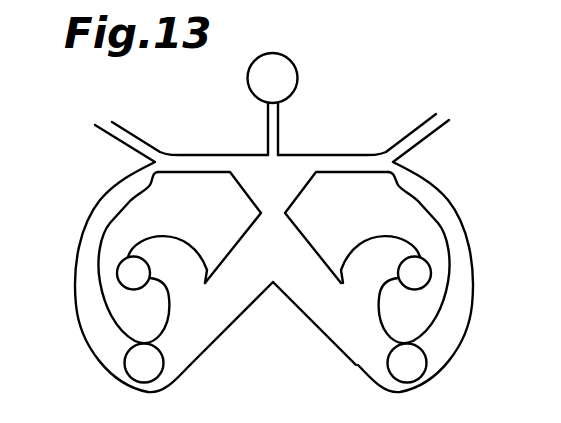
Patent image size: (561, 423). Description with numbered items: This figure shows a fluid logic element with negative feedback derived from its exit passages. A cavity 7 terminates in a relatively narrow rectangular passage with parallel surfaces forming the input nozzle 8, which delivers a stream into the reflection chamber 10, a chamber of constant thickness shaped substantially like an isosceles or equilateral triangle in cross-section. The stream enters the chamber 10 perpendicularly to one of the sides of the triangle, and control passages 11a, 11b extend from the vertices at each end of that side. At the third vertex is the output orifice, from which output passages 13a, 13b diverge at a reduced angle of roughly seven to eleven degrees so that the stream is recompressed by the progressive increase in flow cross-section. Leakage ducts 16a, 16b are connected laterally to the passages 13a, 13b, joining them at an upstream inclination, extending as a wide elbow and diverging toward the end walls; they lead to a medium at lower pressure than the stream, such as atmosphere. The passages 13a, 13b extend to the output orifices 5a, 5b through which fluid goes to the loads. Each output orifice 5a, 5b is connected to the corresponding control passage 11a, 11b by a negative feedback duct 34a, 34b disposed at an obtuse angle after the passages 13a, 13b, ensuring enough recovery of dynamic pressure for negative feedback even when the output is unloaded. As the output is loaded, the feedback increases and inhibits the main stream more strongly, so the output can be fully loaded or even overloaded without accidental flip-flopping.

The cavity 7 is at (297, 66).
The input nozzle 8 is at (279, 128).
The reflection chamber 10 is at (273, 225).
The control passage 11a is at (197, 163).
The control passage 11b is at (352, 163).
The output passage 13a is at (232, 302).
The output passage 13b is at (328, 312).
The leakage duct 16a is at (175, 250).
The leakage duct 16b is at (388, 250).
The negative feedback duct 34a is at (92, 297).
The negative feedback duct 34b is at (458, 235).
The output orifice 5a is at (150, 373).
The output orifice 5b is at (416, 383).